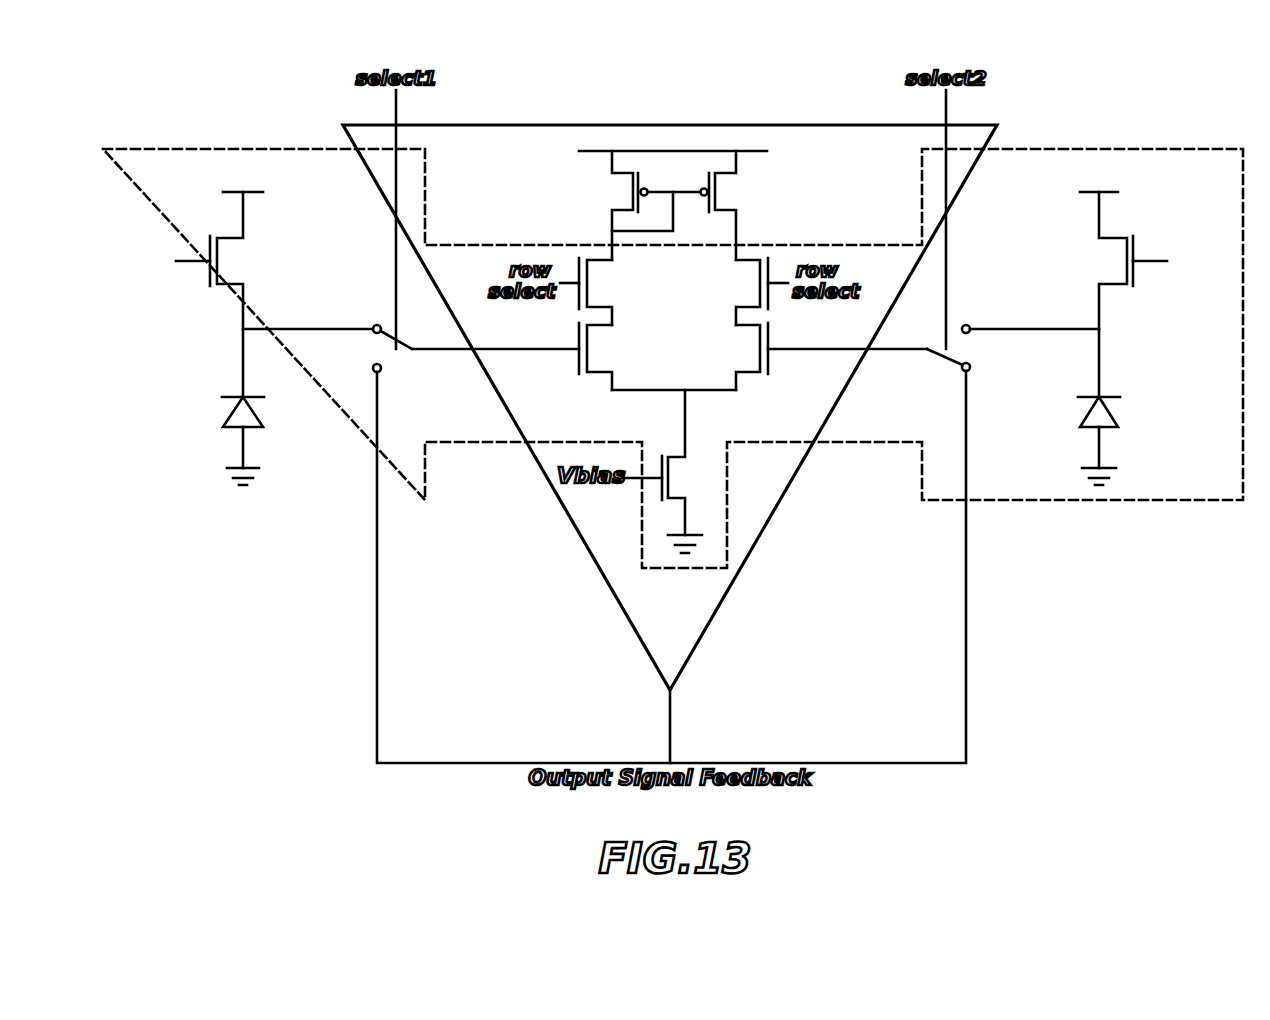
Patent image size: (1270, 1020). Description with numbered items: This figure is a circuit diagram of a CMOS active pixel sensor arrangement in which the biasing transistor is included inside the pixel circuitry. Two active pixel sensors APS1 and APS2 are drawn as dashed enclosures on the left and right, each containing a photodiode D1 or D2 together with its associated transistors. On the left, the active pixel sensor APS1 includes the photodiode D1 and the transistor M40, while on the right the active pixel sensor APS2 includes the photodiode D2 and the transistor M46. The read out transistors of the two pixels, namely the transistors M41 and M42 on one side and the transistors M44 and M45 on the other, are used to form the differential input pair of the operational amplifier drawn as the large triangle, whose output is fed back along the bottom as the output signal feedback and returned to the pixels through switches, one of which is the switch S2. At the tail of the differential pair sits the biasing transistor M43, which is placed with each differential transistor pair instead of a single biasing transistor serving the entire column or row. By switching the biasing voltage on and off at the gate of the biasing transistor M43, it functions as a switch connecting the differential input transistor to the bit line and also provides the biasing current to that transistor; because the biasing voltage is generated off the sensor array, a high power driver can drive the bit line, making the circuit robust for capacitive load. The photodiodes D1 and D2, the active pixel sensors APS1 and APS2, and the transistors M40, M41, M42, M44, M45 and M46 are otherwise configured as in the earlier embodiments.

The transistor M40 is at (233, 294).
The transistor M41 is at (610, 291).
The transistor M42 is at (536, 356).
The biasing transistor M43 is at (675, 471).
The transistor M44 is at (742, 291).
The transistor M45 is at (812, 356).
The transistor M46 is at (1114, 294).
The photodiode D1 is at (226, 441).
The photodiode D2 is at (1121, 441).
The select switch S2 is at (378, 348).
The active pixel sensor APS1 is at (242, 325).
The active pixel sensor APS2 is at (1151, 325).